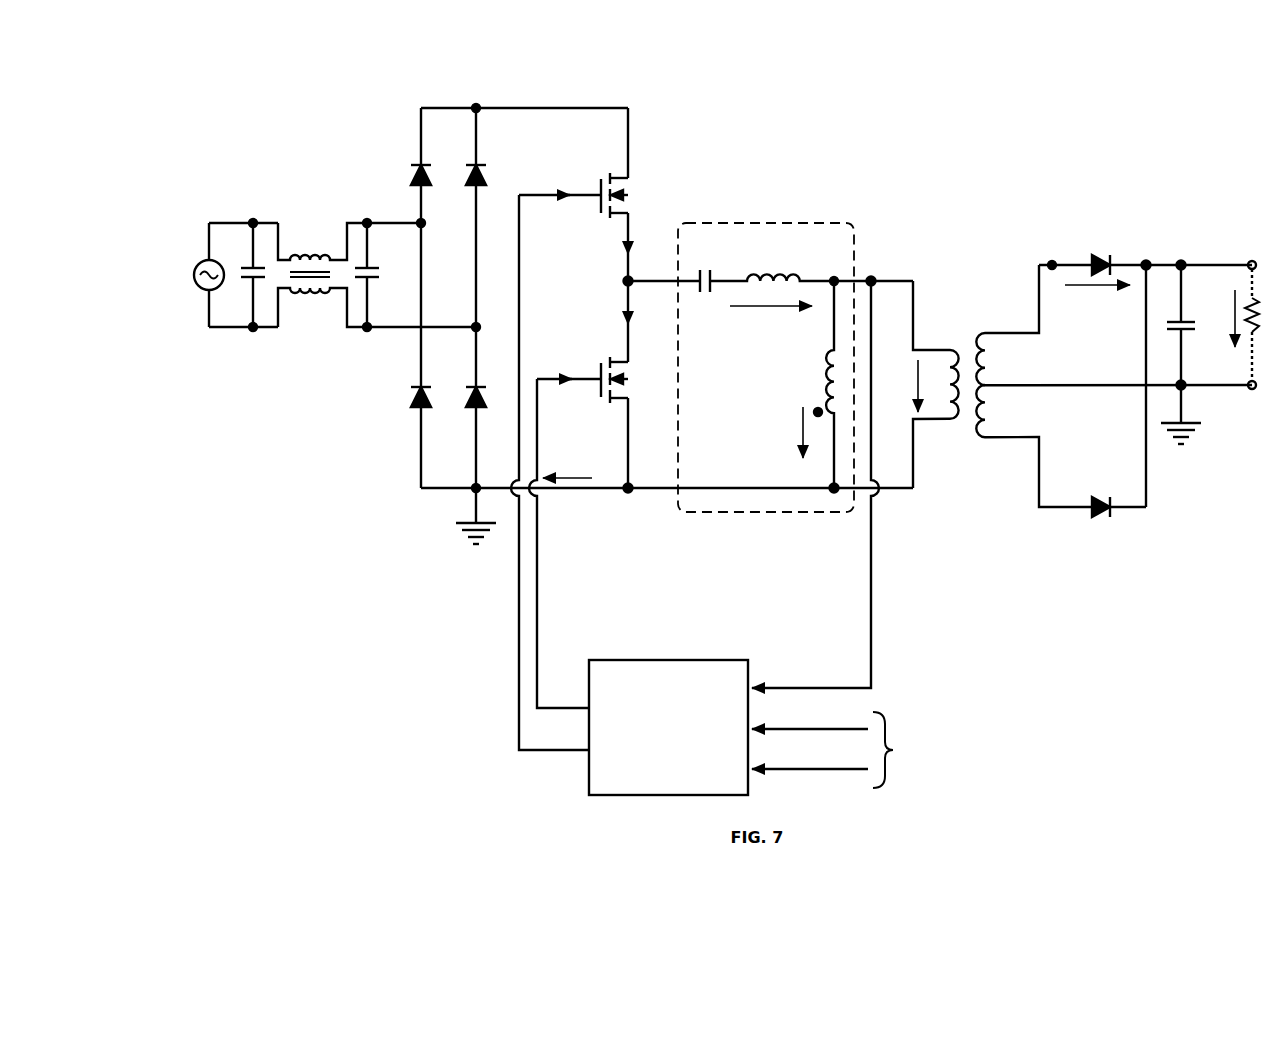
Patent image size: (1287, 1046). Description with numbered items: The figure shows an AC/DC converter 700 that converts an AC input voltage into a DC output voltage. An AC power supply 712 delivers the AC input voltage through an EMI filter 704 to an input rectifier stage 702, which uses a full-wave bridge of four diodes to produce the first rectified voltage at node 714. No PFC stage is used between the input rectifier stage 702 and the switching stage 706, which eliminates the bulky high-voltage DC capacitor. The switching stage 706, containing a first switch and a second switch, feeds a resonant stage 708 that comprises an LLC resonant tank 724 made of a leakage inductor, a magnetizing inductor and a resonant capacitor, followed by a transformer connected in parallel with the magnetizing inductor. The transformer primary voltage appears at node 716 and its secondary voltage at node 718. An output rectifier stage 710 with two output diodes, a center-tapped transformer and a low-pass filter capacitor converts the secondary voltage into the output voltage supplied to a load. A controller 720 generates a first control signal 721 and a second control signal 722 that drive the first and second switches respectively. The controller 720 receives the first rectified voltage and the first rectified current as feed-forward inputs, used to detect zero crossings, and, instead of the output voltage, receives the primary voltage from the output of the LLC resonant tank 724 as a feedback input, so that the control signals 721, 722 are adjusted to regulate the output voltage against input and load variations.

The AC/DC converter 700 is at (889, 45).
The input rectifier stage 702 is at (646, 373).
The EMI filter 704 is at (310, 305).
The switching stage 706 is at (589, 418).
The resonant stage 708 is at (940, 425).
The output rectifier stage 710 is at (1146, 434).
The AC power supply 712 is at (219, 197).
The node 714 is at (475, 106).
The node 716 is at (833, 280).
The node 718 is at (1050, 265).
The controller 720 is at (841, 727).
The control signal 721 is at (528, 193).
The control signal 722 is at (564, 501).
The LLC resonant tank 724 is at (688, 220).